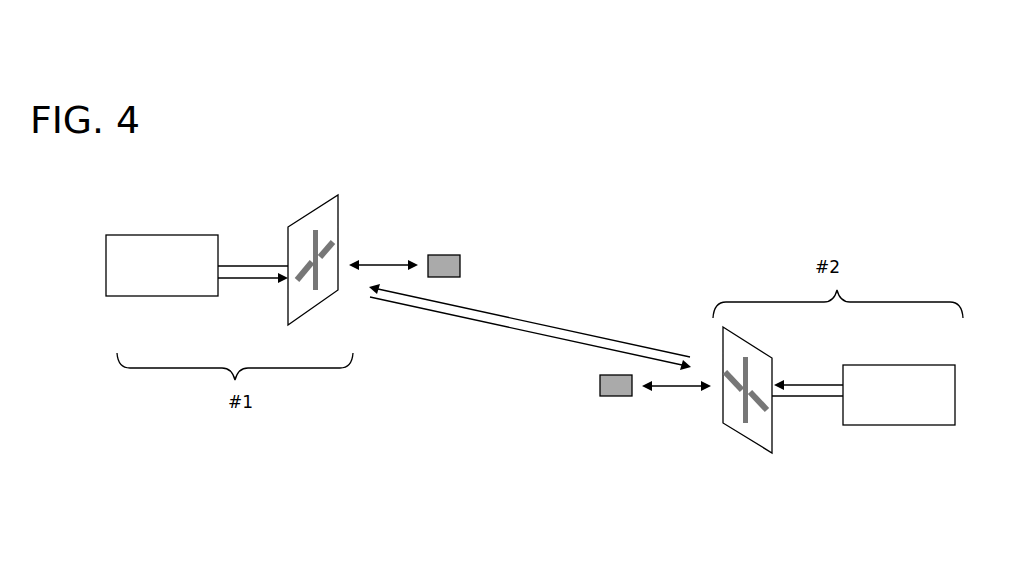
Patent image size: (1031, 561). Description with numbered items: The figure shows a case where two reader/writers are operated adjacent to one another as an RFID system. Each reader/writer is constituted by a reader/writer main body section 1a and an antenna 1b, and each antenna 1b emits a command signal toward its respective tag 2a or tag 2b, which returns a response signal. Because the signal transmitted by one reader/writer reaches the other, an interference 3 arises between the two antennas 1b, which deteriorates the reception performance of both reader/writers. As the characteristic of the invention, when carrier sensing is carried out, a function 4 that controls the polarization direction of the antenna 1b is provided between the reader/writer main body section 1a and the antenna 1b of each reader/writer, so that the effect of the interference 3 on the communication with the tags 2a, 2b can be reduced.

The reader/writer main body section 1a is at (213, 236).
The antenna 1b is at (340, 195).
The tag 2a is at (452, 253).
The tag 2b is at (607, 399).
The interference 3 is at (551, 326).
The function that controls the polarization direction of the antenna 4 is at (256, 292).